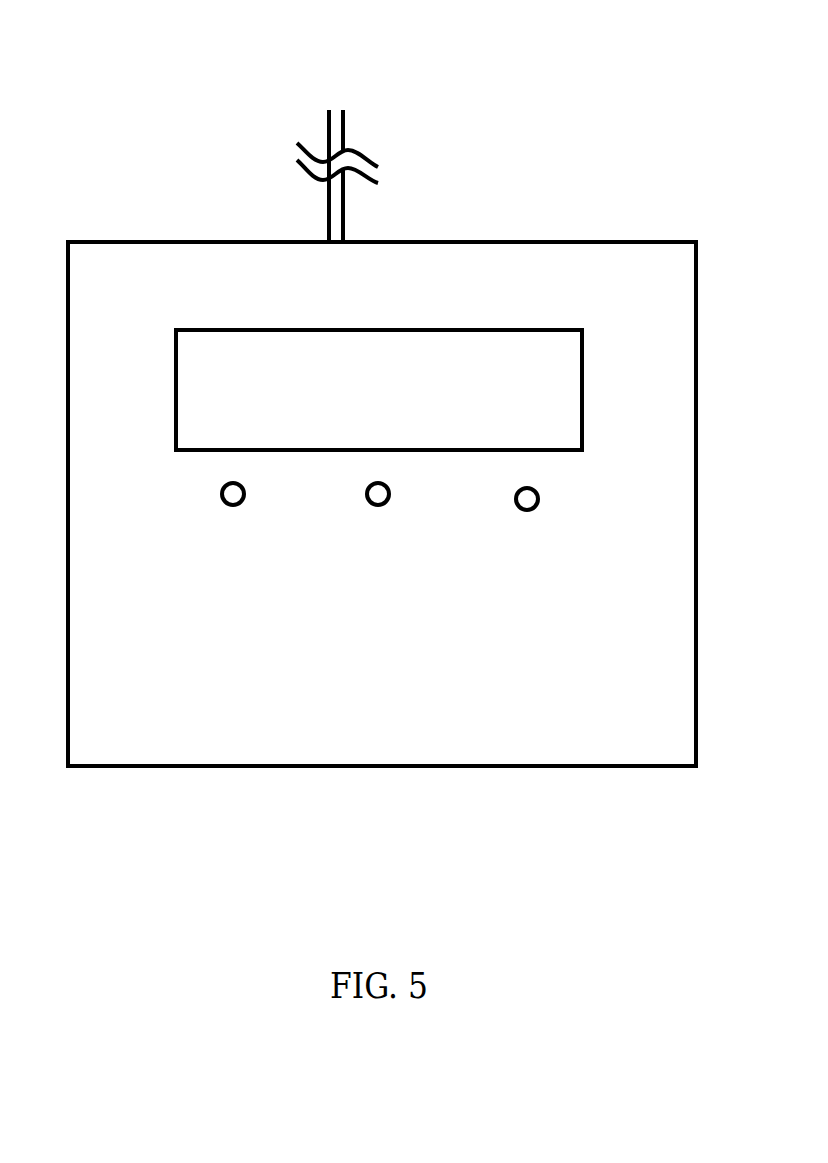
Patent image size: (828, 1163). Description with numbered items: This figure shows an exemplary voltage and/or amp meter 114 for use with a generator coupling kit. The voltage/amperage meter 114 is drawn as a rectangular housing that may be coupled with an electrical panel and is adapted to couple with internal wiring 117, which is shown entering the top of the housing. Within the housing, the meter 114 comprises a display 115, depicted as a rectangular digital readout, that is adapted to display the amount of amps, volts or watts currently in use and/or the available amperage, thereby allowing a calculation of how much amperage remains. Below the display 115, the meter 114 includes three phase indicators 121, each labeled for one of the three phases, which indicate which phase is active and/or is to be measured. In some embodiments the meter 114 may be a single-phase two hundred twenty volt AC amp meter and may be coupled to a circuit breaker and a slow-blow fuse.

The voltage/amperage meter 114 is at (130, 292).
The display 115 is at (425, 328).
The internal wiring 117 is at (323, 130).
The phase indicators 121 is at (233, 494).